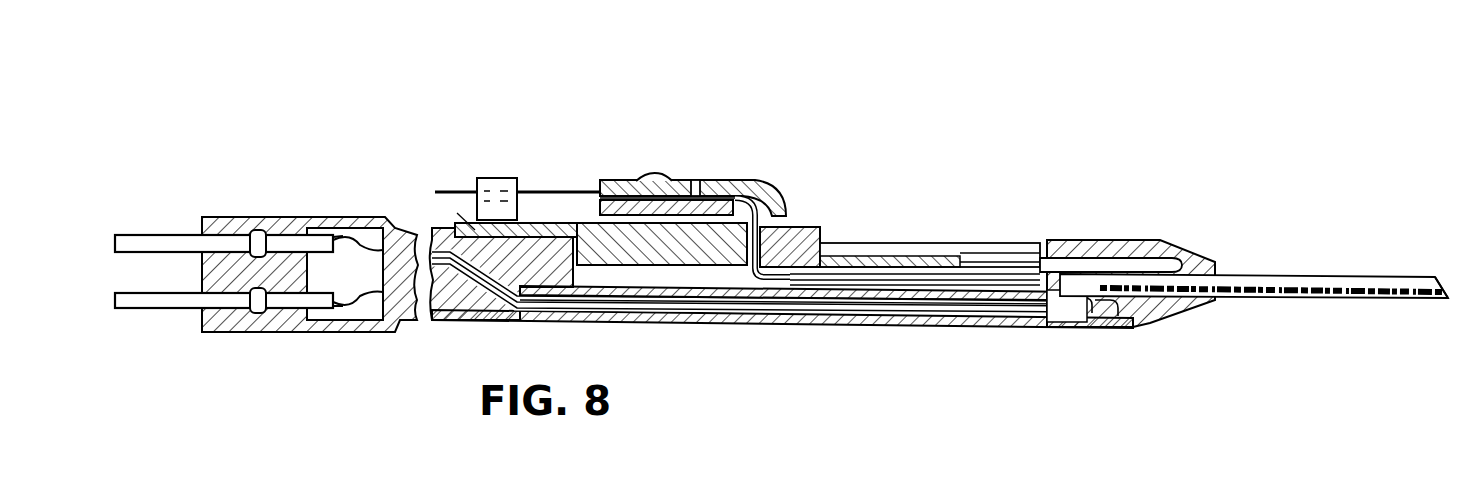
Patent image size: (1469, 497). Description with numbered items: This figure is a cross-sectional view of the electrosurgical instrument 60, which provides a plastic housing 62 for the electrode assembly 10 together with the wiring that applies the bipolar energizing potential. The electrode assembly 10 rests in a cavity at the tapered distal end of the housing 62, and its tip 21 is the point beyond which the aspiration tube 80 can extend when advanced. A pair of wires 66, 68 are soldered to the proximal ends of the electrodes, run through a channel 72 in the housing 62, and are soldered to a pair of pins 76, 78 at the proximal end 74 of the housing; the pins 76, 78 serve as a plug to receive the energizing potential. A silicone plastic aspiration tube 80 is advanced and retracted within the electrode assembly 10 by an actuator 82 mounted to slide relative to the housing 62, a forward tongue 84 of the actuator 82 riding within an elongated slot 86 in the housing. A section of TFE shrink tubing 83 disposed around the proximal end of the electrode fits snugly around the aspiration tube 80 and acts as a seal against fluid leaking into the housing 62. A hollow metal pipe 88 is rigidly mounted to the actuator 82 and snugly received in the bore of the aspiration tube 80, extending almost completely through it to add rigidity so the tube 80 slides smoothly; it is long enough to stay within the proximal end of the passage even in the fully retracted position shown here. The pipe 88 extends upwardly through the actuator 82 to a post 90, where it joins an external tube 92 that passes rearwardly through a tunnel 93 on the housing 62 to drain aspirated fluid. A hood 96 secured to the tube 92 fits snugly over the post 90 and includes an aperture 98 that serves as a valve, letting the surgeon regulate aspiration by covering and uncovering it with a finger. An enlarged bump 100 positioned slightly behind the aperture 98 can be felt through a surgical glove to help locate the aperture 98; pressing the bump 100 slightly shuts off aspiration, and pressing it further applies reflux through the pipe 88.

The electrode assembly 10 is at (1284, 256).
The tip 21 is at (1454, 280).
The electrosurgical instrument 60 is at (908, 92).
The housing 62 is at (1100, 240).
The wire 66 is at (347, 238).
The wire 68 is at (348, 323).
The channel 72 is at (855, 318).
The proximal end 74 is at (250, 218).
The pin 76 is at (156, 240).
The pin 78 is at (170, 310).
The aspiration tube 80 is at (980, 280).
The actuator 82 is at (803, 223).
The tubing section 83 is at (977, 327).
The forward tongue 84 is at (897, 250).
The elongated slot 86 is at (1037, 265).
The hollow metal pipe 88 is at (752, 270).
The post 90 is at (777, 220).
The external tube 92 is at (567, 188).
The tunnel 93 is at (493, 177).
The hood 96 is at (750, 182).
The aperture 98 is at (697, 180).
The bump 100 is at (648, 178).